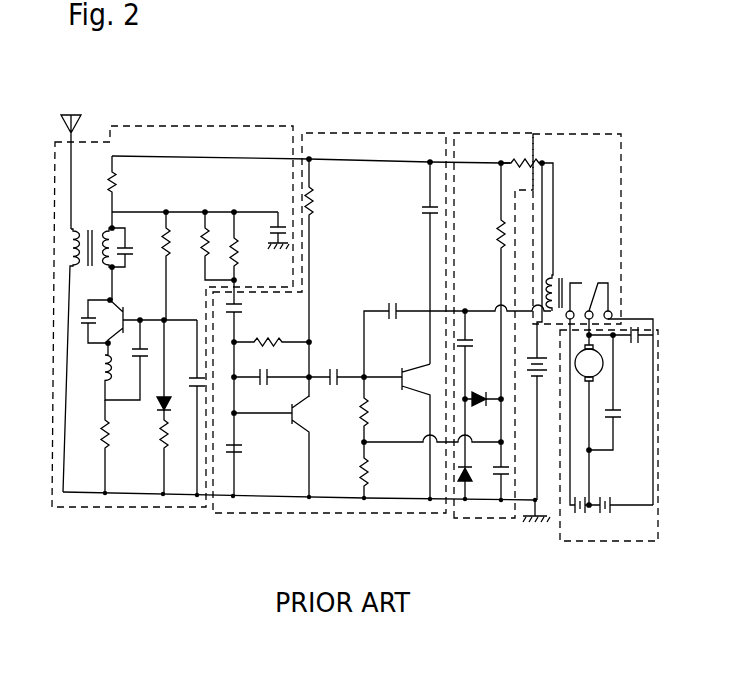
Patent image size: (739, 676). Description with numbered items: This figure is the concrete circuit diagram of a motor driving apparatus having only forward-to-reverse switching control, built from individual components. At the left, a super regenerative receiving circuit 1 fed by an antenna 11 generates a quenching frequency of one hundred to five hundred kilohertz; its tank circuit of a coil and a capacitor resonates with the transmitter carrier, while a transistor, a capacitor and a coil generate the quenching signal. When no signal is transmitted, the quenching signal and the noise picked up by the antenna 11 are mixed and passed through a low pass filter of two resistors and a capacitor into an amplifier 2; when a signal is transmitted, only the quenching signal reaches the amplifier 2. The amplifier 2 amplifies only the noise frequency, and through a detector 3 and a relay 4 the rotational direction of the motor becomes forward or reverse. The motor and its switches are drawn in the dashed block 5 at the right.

The super regenerative receiving circuit 1 is at (148, 505).
The amplifier 2 is at (300, 514).
The detector 3 is at (482, 519).
The relay 4 is at (576, 135).
The motor and switch unit 5 is at (577, 541).
The antenna 11 is at (76, 115).